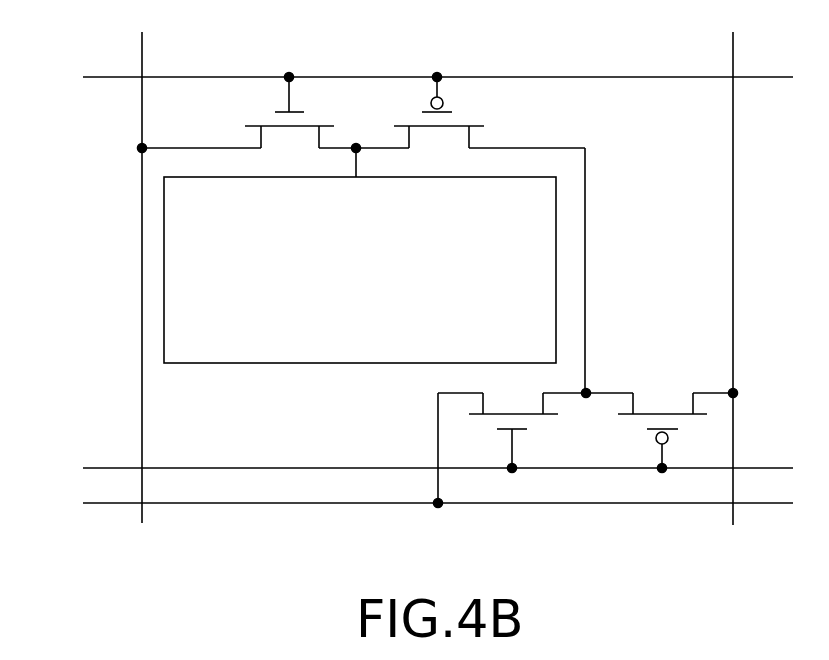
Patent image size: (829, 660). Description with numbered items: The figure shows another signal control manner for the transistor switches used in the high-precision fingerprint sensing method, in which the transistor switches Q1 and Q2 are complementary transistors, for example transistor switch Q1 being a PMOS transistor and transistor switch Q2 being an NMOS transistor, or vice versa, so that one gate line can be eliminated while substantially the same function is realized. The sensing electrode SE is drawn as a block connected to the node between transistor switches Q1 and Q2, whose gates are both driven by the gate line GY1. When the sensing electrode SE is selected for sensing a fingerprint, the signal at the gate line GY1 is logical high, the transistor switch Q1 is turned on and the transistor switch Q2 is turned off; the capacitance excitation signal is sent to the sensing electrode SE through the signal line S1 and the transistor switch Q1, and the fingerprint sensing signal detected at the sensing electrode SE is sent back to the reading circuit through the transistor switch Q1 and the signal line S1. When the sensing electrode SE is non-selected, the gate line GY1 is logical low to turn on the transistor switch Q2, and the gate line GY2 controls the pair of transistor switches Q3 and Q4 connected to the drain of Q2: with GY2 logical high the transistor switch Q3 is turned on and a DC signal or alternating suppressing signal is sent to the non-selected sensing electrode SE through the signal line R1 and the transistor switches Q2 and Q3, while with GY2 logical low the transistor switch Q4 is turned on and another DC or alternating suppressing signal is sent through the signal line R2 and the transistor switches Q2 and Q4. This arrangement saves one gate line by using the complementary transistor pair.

The transistor switch Q1 is at (275, 127).
The transistor switch Q2 is at (489, 235).
The transistor switch Q3 is at (535, 437).
The transistor switch Q4 is at (675, 420).
The sensing electrode SE is at (360, 270).
The gate line GY1 is at (411, 76).
The gate line GY2 is at (411, 468).
The signal line R1 is at (419, 503).
The signal line R2 is at (732, 295).
The signal line S1 is at (142, 294).